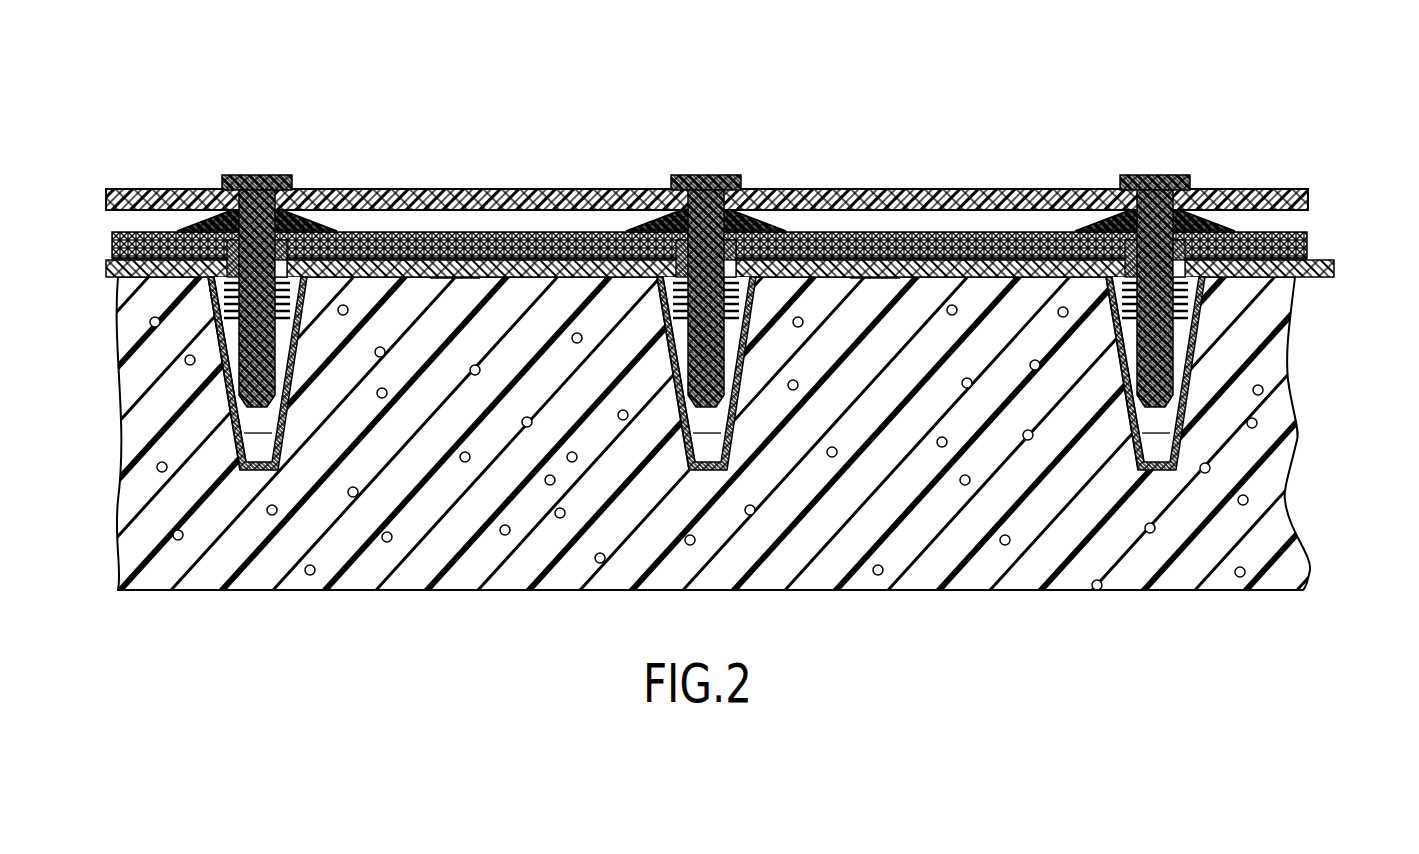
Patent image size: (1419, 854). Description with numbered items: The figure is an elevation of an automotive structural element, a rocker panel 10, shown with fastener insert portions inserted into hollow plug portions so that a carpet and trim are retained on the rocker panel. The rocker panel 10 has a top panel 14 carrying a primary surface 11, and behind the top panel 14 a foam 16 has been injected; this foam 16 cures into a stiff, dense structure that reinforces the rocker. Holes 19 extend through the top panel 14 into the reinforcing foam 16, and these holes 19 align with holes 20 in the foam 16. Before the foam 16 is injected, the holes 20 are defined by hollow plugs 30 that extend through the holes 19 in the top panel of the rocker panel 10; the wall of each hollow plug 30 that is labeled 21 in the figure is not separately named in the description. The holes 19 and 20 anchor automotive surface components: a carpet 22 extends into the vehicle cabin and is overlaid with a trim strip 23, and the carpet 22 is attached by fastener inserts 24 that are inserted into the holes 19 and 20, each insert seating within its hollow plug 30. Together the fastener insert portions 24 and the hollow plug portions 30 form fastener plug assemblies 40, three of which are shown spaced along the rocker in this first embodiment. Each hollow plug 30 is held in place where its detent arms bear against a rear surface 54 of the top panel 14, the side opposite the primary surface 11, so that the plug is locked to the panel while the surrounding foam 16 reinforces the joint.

The rocker panel 10 is at (1298, 490).
The primary surface 11 is at (1322, 263).
The top panel 14 is at (1318, 247).
The foam 16 is at (1258, 403).
The holes 19 is at (310, 267).
The holes 20 is at (214, 348).
The sleeve outer wall 21 is at (212, 328).
The carpet 22 is at (1268, 240).
The trim strip 23 is at (1242, 190).
The fastener inserts 24 is at (232, 170).
The hollow plugs 30 is at (215, 406).
The fastener plug assemblies 40 is at (320, 305).
The rear surface 54 is at (455, 290).